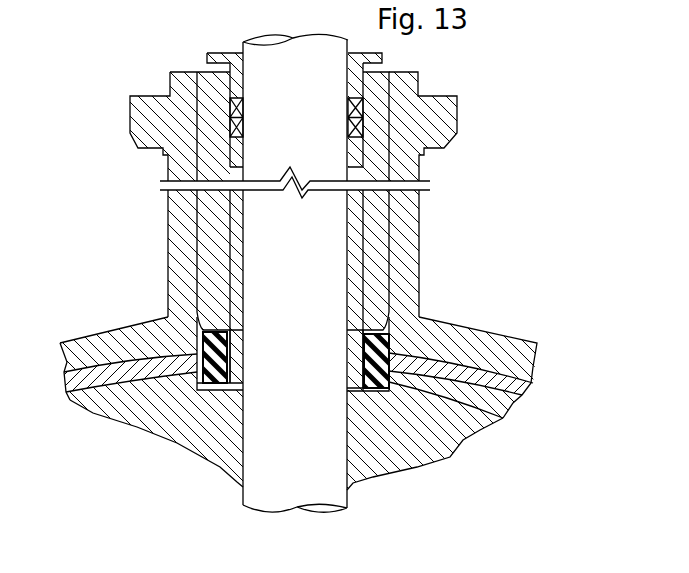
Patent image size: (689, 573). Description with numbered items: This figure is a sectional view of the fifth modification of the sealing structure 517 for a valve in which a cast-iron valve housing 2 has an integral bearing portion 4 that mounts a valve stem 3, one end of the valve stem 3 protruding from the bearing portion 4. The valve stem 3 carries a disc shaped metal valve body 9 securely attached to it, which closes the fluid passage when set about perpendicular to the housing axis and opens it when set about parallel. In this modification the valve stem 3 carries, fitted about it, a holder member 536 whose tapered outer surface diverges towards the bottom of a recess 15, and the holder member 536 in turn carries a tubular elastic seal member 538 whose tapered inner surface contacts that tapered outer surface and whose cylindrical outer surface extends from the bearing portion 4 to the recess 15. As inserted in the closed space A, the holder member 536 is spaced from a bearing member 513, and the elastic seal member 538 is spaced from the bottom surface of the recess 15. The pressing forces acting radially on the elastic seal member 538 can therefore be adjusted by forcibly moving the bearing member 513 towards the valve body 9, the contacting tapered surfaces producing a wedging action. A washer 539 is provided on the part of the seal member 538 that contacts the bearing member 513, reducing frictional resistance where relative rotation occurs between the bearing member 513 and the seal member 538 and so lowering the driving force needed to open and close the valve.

The valve housing 2 is at (513, 337).
The valve stem 3 is at (320, 284).
The bearing portion 4 is at (410, 223).
The valve body 9 is at (458, 433).
The recess 15 is at (227, 383).
The bearing member 513 is at (203, 260).
The sealing structure 517 is at (173, 402).
The holder member 536 is at (237, 355).
The elastic seal member 538 is at (503, 418).
The washer 539 is at (386, 326).
The closed space A is at (377, 421).